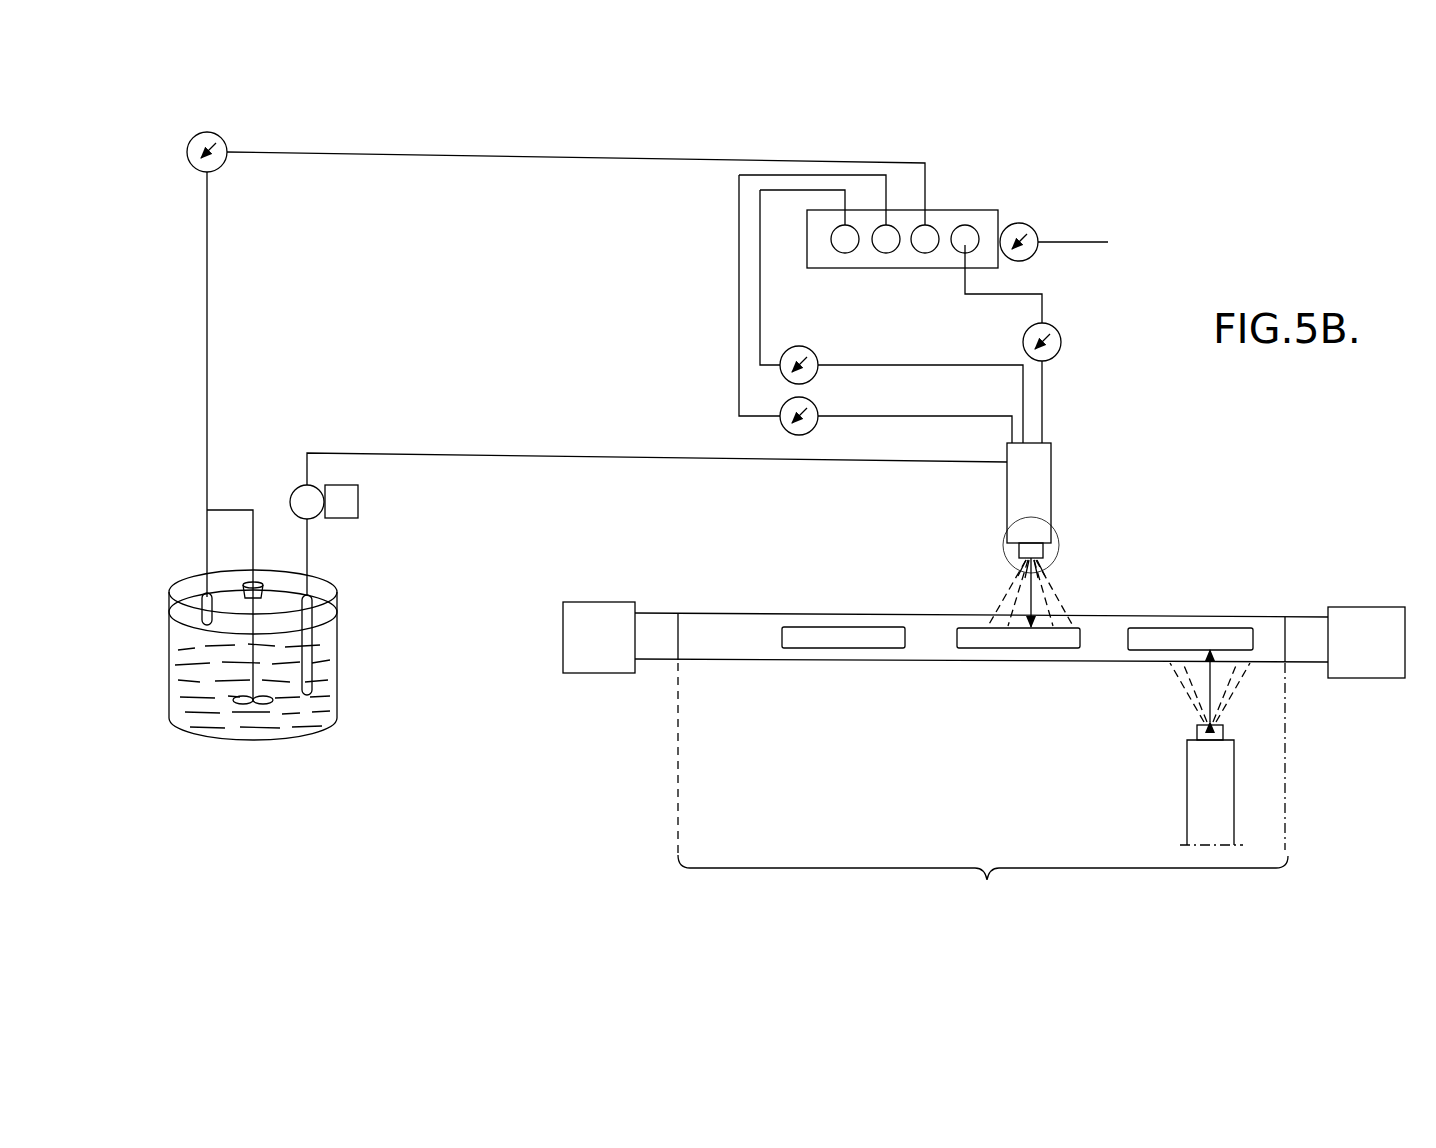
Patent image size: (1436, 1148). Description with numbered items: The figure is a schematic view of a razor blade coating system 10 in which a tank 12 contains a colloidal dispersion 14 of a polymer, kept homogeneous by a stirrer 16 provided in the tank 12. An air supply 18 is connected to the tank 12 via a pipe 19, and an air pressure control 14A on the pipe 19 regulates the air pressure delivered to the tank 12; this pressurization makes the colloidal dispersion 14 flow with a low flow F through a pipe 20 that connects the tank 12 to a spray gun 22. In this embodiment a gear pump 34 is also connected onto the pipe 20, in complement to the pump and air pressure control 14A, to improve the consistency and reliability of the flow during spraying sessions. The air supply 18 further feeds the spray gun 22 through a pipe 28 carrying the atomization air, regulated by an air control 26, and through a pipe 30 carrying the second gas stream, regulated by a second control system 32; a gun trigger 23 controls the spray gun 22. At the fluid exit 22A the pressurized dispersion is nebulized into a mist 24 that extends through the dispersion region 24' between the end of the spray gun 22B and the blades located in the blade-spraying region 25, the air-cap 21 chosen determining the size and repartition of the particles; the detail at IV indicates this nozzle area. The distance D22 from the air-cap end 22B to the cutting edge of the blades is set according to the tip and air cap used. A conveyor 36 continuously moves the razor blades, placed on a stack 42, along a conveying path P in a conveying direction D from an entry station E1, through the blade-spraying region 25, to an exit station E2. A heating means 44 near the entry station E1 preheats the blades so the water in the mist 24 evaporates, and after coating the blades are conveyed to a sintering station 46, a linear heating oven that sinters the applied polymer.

The razor blade coating system 10 is at (978, 197).
The tank 12 is at (338, 695).
The colloidal dispersion 14 is at (320, 660).
The air pressure control 14A is at (214, 142).
The stirrer 16 is at (257, 630).
The air supply 18 is at (1071, 242).
The pipe 19 is at (466, 157).
The pipe 20 is at (878, 462).
The air-cap 21 is at (1197, 733).
The spray gun 22 is at (1030, 480).
The fluid exit 22A is at (1017, 552).
The end of the spray gun 22B is at (1222, 723).
The gun trigger 23 is at (1062, 340).
The mist 24 is at (1157, 641).
The dispersion region 24' is at (1122, 649).
The blade-spraying region 25 is at (978, 611).
The air control 26 is at (798, 352).
The pipe 28 is at (928, 365).
The pipe 30 is at (953, 416).
The second control system 32 is at (806, 413).
The gear pump 34 is at (348, 507).
The conveyor 36 is at (758, 613).
The stack 42 is at (833, 637).
The heating means 44 is at (584, 650).
The sintering station 46 is at (1350, 656).
The distance D22 is at (1046, 585).
The detail IV is at (1004, 540).
The entry station E1 is at (643, 649).
The exit station E2 is at (1292, 653).
The conveying direction D is at (760, 648).
The flow F is at (590, 443).
The conveying path P is at (983, 786).